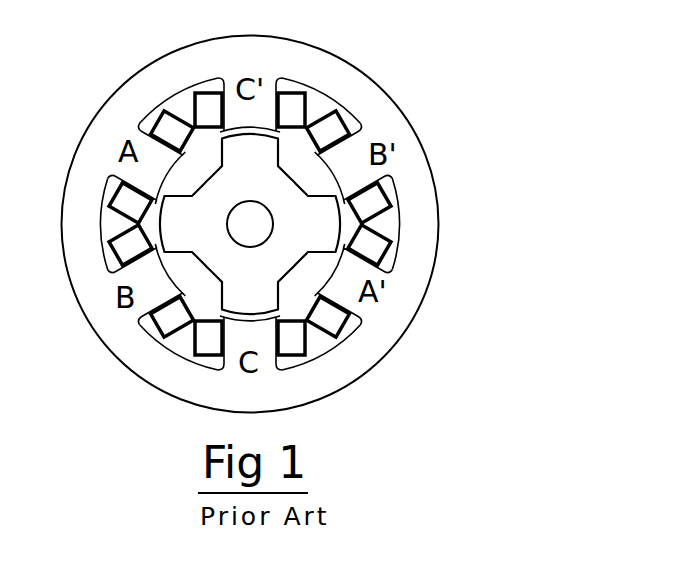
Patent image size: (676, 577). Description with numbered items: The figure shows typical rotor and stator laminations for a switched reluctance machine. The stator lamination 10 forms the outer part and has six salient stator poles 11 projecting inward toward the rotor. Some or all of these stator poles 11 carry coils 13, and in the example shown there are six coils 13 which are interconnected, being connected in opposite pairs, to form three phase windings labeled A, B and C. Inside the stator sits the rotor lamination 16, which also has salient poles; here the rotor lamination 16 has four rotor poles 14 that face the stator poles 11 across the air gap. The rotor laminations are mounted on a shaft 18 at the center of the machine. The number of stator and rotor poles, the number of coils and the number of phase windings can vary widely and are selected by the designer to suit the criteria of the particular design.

The stator lamination 10 is at (405, 109).
The stator poles 11 is at (267, 108).
The coils 13 is at (328, 130).
The rotor poles 14 is at (191, 250).
The rotor lamination 16 is at (250, 224).
The shaft 18 is at (255, 228).